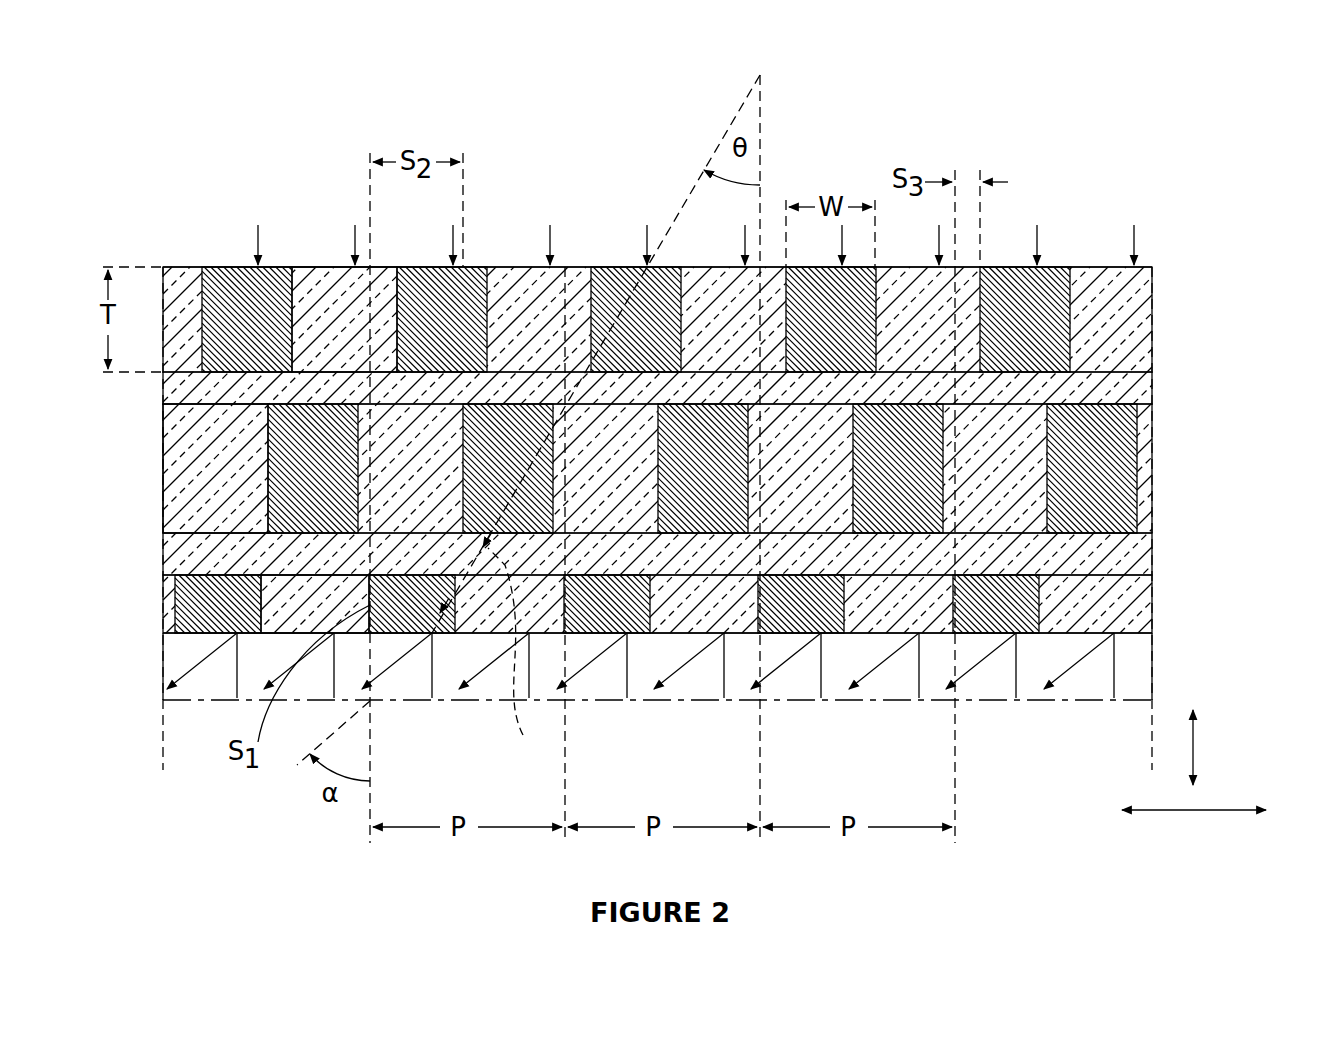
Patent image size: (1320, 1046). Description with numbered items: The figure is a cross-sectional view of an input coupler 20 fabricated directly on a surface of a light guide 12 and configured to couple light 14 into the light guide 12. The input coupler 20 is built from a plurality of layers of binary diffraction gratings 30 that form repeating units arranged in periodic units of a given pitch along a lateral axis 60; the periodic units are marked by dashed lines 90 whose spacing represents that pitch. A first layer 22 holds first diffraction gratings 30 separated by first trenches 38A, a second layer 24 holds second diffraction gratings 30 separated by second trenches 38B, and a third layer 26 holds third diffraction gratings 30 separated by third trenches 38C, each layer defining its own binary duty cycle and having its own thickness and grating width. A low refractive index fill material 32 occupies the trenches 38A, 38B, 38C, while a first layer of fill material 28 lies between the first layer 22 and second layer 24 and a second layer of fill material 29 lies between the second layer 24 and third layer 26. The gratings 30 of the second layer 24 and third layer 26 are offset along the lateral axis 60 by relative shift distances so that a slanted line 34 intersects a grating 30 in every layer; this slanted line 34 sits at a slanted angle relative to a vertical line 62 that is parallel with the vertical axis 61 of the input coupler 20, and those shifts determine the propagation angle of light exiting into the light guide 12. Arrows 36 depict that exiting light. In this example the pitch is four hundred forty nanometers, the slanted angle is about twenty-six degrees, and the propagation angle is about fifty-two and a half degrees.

The light guide 12 is at (1150, 660).
The light 14 is at (647, 262).
The input coupler 20 is at (184, 164).
The first layer 22 is at (1150, 600).
The second layer 24 is at (1150, 463).
The third layer 26 is at (1150, 318).
The first layer of fill material 28 is at (1150, 553).
The second layer of fill material 29 is at (1150, 386).
The diffraction gratings 30 is at (1015, 290).
The fill material 32 is at (1098, 283).
The slanted line 34 is at (516, 660).
The output light rays 36 is at (385, 657).
The first trenches 38A is at (290, 603).
The second trenches 38B is at (222, 472).
The third trenches 38C is at (330, 297).
The lateral axis 60 is at (1225, 810).
The vertical axis 61 is at (1193, 745).
The vertical line 62 is at (766, 122).
The dashed lines 90 is at (566, 748).